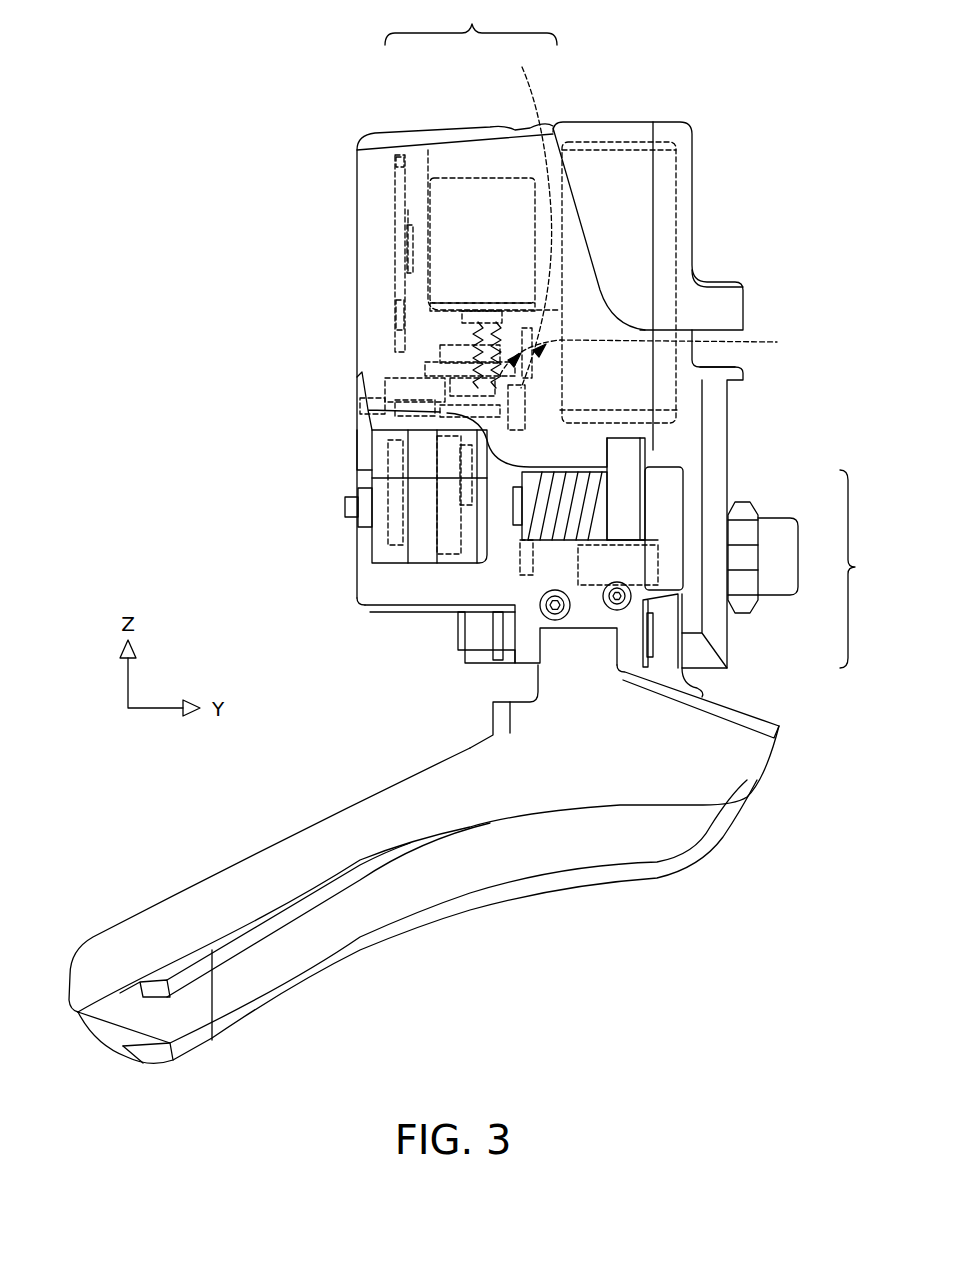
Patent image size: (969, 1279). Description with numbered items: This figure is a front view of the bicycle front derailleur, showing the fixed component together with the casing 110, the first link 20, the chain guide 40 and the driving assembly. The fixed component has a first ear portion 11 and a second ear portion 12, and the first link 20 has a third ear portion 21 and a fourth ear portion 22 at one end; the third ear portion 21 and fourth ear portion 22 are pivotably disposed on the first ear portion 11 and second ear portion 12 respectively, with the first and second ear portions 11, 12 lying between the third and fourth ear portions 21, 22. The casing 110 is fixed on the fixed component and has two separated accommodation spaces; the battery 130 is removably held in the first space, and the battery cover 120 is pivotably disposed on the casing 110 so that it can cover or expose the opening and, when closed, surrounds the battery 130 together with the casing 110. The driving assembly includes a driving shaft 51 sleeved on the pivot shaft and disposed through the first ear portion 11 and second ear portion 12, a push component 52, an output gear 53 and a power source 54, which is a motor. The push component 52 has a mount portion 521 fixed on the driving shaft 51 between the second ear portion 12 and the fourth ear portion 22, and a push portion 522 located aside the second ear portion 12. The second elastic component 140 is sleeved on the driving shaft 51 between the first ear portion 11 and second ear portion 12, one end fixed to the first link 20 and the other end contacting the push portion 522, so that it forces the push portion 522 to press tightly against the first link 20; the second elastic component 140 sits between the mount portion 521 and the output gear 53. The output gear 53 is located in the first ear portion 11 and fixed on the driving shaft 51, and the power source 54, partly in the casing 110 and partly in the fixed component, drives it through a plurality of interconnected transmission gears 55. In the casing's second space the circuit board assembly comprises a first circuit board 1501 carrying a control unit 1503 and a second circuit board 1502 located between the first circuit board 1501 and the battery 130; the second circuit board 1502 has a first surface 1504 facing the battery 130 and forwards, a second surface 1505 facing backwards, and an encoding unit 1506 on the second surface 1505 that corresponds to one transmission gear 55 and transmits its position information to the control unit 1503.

The first ear portion 11 is at (400, 512).
The second ear portion 12 is at (625, 482).
The first link 20 is at (467, 648).
The third ear portion 21 is at (377, 490).
The fourth ear portion 22 is at (668, 480).
The chain guide 40 is at (557, 893).
The driving shaft 51 is at (522, 513).
The push component 52 is at (729, 569).
The mount portion 521 is at (647, 508).
The push portion 522 is at (673, 598).
The output gear 53 is at (400, 528).
The power source 54 is at (443, 282).
The transmission gears 55 is at (420, 370).
The casing 110 is at (377, 236).
The battery cover 120 is at (688, 128).
The battery 130 is at (618, 165).
The second elastic component 140 is at (527, 498).
The first circuit board 1501 is at (398, 197).
The second circuit board 1502 is at (494, 215).
The control unit 1503 is at (408, 215).
The first surface 1504 is at (663, 353).
The second surface 1505 is at (708, 372).
The encoding unit 1506 is at (677, 410).